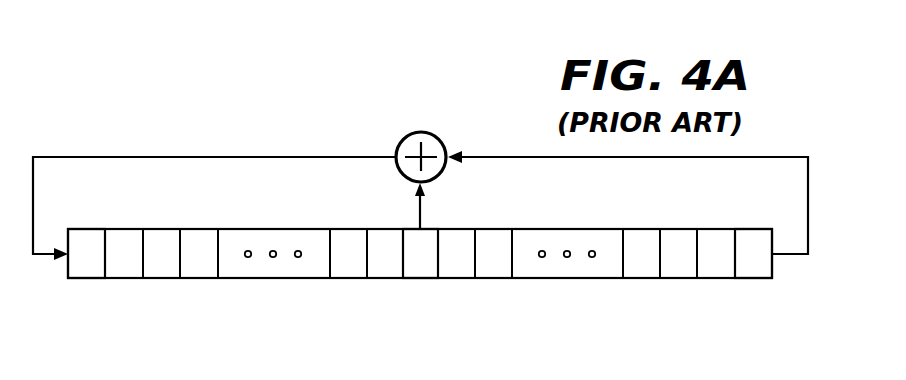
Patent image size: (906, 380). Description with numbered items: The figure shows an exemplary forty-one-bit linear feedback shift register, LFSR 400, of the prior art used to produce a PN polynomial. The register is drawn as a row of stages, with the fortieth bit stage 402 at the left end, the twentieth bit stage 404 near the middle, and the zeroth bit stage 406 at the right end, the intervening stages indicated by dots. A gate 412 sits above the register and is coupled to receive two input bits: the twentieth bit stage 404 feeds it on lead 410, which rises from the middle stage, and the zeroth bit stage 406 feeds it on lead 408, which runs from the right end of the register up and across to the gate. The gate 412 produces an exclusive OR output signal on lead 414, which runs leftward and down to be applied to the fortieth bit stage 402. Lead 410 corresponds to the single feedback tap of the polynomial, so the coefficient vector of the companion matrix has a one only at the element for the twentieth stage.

The LFSR 400 is at (294, 117).
The bit 40 402 is at (90, 279).
The bit 20 404 is at (420, 279).
The bit 0 406 is at (752, 279).
The lead 408 is at (632, 158).
The lead 410 is at (418, 211).
The gate 412 is at (413, 132).
The lead 414 is at (212, 158).